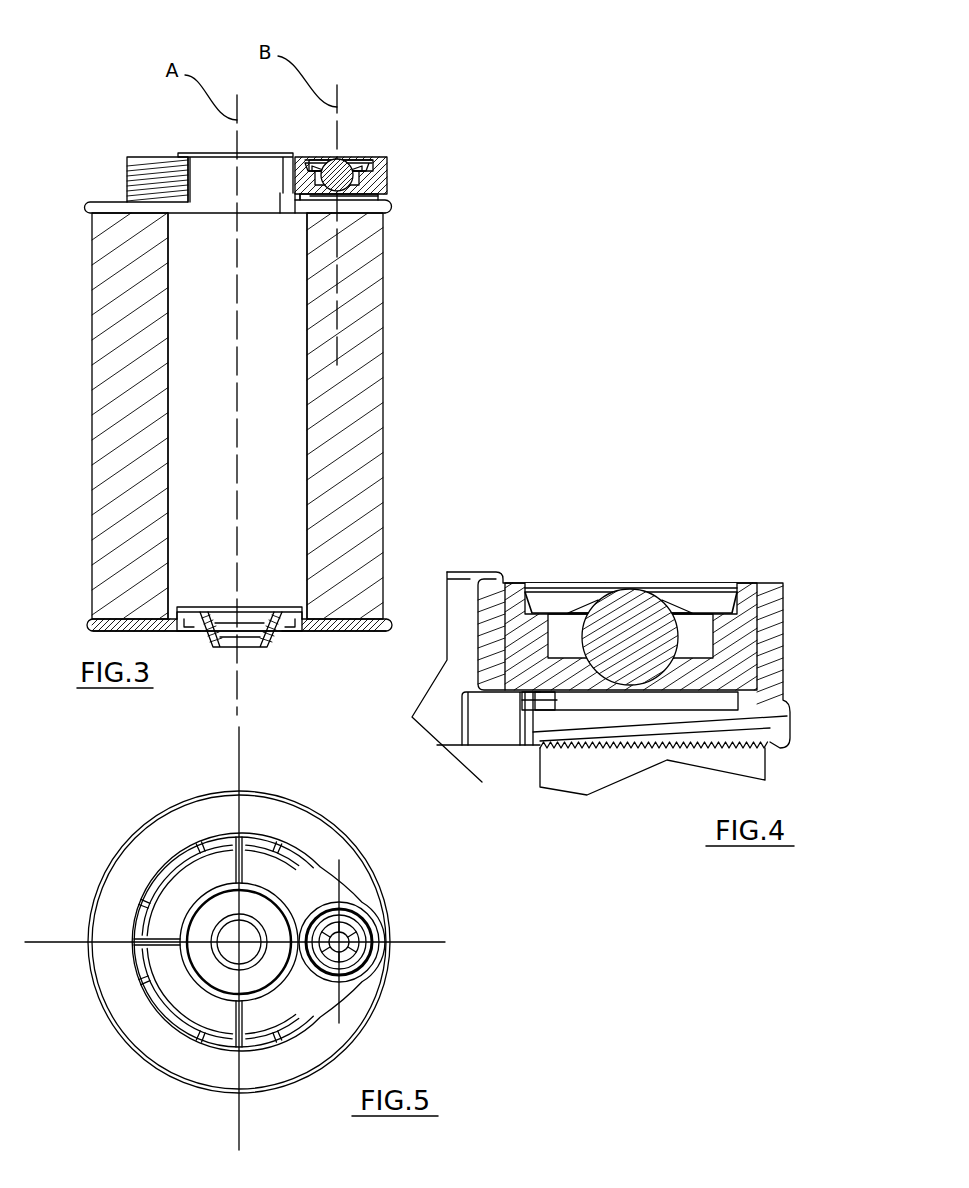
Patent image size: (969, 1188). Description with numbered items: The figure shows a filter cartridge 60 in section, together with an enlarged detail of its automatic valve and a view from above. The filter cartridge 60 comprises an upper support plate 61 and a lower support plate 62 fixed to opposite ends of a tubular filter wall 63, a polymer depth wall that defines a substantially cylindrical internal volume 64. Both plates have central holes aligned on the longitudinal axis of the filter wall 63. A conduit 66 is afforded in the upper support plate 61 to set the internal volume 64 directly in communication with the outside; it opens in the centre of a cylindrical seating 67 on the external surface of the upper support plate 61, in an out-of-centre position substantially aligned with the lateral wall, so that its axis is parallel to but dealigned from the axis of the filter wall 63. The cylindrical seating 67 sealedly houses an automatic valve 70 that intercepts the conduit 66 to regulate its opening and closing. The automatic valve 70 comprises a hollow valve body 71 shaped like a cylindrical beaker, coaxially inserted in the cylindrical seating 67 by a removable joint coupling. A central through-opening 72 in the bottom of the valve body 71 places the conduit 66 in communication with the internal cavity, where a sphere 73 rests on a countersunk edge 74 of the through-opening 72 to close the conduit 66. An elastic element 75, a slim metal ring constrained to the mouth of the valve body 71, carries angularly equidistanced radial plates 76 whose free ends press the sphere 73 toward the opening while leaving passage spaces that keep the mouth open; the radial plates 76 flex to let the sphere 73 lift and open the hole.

In FIG. 3, the filter cartridge 60 is at (134, 128).
In FIG. 5, the filter cartridge 60 is at (110, 836).
In FIG. 3, the upper support plate 61 is at (127, 185).
In FIG. 5, the upper support plate 61 is at (138, 1022).
In FIG. 3, the lower support plate 62 is at (347, 633).
In FIG. 3, the tubular filter wall 63 is at (120, 410).
In FIG. 3, the internal volume 64 is at (258, 490).
In FIG. 3, the conduit 66 is at (323, 200).
In FIG. 4, the conduit 66 is at (525, 700).
In FIG. 3, the cylindrical seating 67 is at (388, 186).
In FIG. 4, the cylindrical seating 67 is at (766, 633).
In FIG. 5, the cylindrical seating 67 is at (363, 897).
In FIG. 3, the automatic valve 70 is at (372, 147).
In FIG. 4, the automatic valve 70 is at (641, 562).
In FIG. 5, the automatic valve 70 is at (393, 965).
In FIG. 3, the hollow valve body 71 is at (384, 167).
In FIG. 4, the hollow valve body 71 is at (515, 630).
In FIG. 5, the hollow valve body 71 is at (358, 927).
In FIG. 3, the central through-opening 72 is at (348, 196).
In FIG. 4, the central through-opening 72 is at (603, 690).
In FIG. 3, the sphere 73 is at (328, 160).
In FIG. 4, the sphere 73 is at (630, 612).
In FIG. 5, the sphere 73 is at (330, 926).
In FIG. 4, the countersunk edge 74 is at (740, 745).
In FIG. 3, the elastic element 75 is at (307, 157).
In FIG. 4, the elastic element 75 is at (538, 607).
In FIG. 5, the elastic element 75 is at (343, 977).
In FIG. 3, the radial plates 76 is at (347, 158).
In FIG. 4, the radial plates 76 is at (587, 597).
In FIG. 5, the radial plates 76 is at (297, 918).